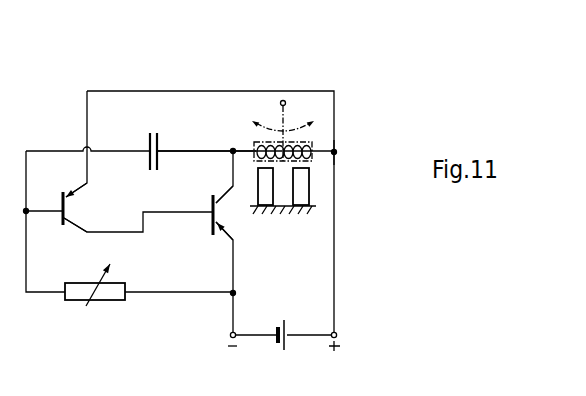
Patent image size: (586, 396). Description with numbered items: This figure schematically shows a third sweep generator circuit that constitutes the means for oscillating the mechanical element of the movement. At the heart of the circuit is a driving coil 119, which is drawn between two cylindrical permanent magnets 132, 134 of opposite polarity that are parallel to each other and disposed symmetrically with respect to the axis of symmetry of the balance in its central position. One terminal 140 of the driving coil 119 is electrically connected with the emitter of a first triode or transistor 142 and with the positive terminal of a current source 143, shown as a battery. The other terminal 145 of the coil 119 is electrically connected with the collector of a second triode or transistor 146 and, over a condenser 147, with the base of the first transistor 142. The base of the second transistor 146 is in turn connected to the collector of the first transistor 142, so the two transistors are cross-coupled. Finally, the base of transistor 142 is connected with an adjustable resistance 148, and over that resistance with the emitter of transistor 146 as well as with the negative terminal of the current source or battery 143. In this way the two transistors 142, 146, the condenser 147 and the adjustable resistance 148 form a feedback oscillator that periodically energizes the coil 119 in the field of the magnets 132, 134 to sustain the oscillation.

The condenser 147 is at (149, 141).
The transistor 142 is at (62, 200).
The second transistor 146 is at (212, 204).
The other terminal 145 is at (241, 150).
The driving coil 119 is at (257, 147).
The terminal 140 is at (336, 152).
The permanent magnet 132 is at (258, 190).
The permanent magnet 134 is at (309, 184).
The current source 143 is at (278, 324).
The adjustable resistance 148 is at (112, 300).